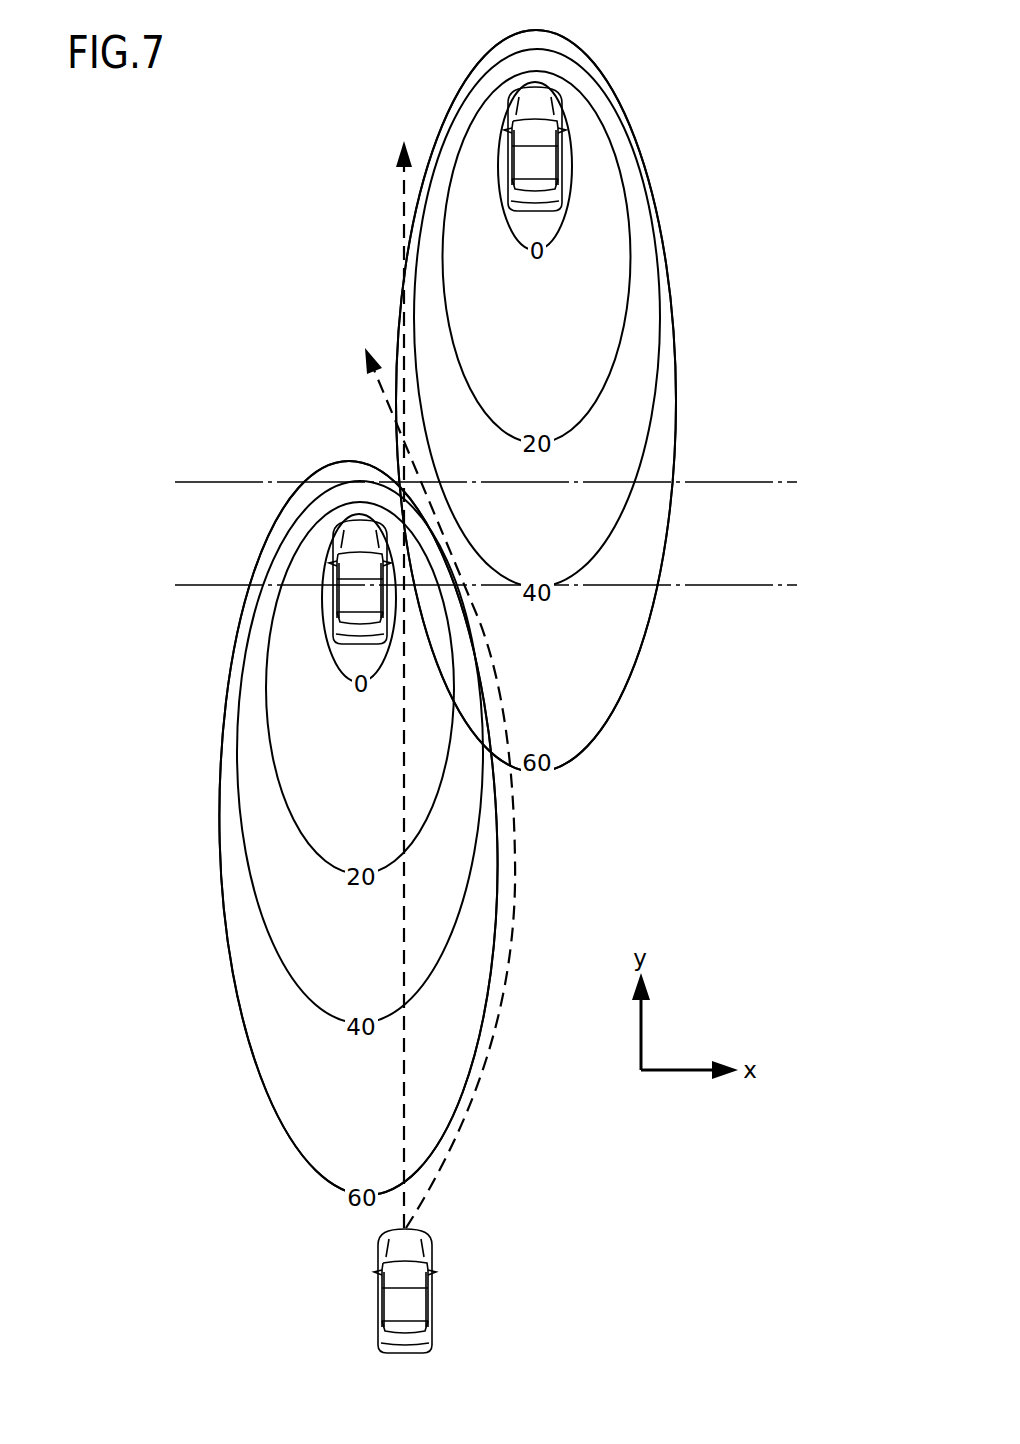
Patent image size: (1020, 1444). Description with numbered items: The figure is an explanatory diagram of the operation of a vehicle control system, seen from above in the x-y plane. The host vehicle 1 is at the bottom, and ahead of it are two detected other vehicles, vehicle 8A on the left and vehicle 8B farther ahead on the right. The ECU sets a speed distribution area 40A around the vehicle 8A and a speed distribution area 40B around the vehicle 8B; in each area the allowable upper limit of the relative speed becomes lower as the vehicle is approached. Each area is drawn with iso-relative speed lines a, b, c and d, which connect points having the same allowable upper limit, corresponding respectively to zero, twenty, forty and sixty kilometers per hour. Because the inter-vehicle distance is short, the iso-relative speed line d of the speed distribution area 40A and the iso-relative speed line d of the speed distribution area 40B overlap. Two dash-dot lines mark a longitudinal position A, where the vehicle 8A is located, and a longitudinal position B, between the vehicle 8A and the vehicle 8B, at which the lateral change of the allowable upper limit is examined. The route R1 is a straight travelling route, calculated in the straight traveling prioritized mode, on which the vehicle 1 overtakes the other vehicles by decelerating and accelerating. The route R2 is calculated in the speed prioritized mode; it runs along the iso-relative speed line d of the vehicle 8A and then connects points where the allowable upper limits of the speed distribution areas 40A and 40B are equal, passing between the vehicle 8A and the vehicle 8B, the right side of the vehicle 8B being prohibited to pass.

The vehicle 1 is at (433, 1302).
The vehicle 8A is at (347, 606).
The vehicle 8B is at (548, 176).
The speed distribution area 40A is at (224, 728).
The speed distribution area 40B is at (664, 250).
The route R1 is at (401, 190).
The route R2 is at (517, 847).
The longitudinal position A is at (790, 583).
The longitudinal position B is at (790, 480).
The iso-relative speed line a is at (549, 243).
The iso-relative speed line b is at (589, 408).
The iso-relative speed line c is at (622, 515).
The iso-relative speed line d is at (650, 617).